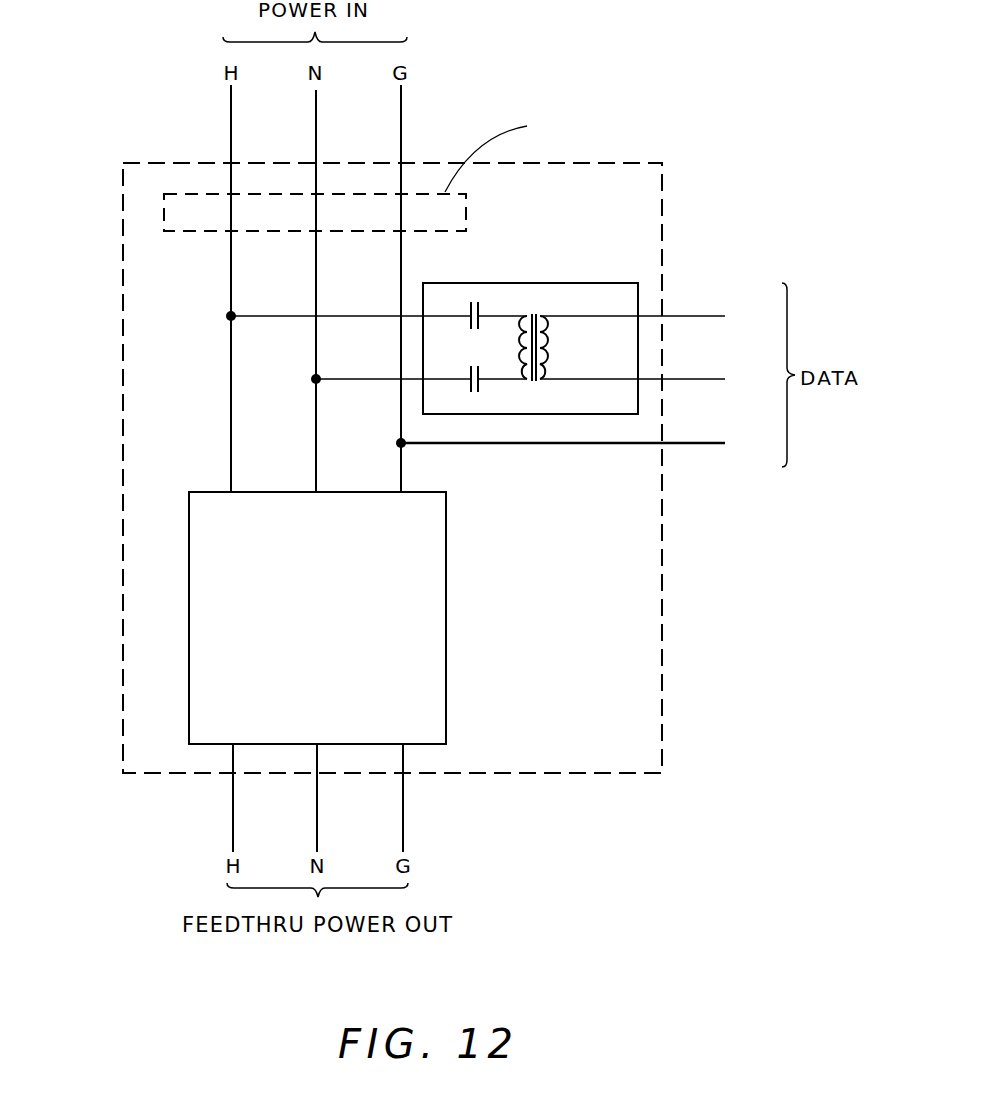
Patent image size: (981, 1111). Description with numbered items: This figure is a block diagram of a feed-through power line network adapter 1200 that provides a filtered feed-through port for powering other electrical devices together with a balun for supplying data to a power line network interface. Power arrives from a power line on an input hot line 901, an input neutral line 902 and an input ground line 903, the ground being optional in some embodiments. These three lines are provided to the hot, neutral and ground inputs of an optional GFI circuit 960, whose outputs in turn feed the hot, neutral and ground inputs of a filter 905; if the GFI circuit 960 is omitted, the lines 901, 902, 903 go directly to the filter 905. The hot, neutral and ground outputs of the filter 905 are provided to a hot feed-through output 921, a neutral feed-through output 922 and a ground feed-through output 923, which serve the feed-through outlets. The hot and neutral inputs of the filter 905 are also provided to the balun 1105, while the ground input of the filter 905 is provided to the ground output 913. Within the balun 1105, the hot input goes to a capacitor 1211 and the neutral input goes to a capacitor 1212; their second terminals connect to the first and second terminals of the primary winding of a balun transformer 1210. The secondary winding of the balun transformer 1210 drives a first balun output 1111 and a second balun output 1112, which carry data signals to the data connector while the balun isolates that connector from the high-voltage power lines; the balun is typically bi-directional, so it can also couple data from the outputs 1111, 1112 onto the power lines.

The input hot line 901 is at (230, 130).
The input neutral line 902 is at (316, 143).
The input ground line 903 is at (401, 145).
The filter 905 is at (221, 492).
The ground output 913 is at (692, 443).
The hot feed-through output 921 is at (232, 797).
The neutral feed-through output 922 is at (316, 810).
The ground feed-through output 923 is at (403, 814).
The GFI circuit 960 is at (467, 204).
The balun 1105 is at (523, 282).
The first balun output 1111 is at (683, 316).
The second balun output 1112 is at (692, 378).
The power line data coupler 1200 is at (122, 270).
The balun transformer 1210 is at (537, 382).
The capacitor 1211 is at (480, 300).
The capacitor 1212 is at (474, 393).